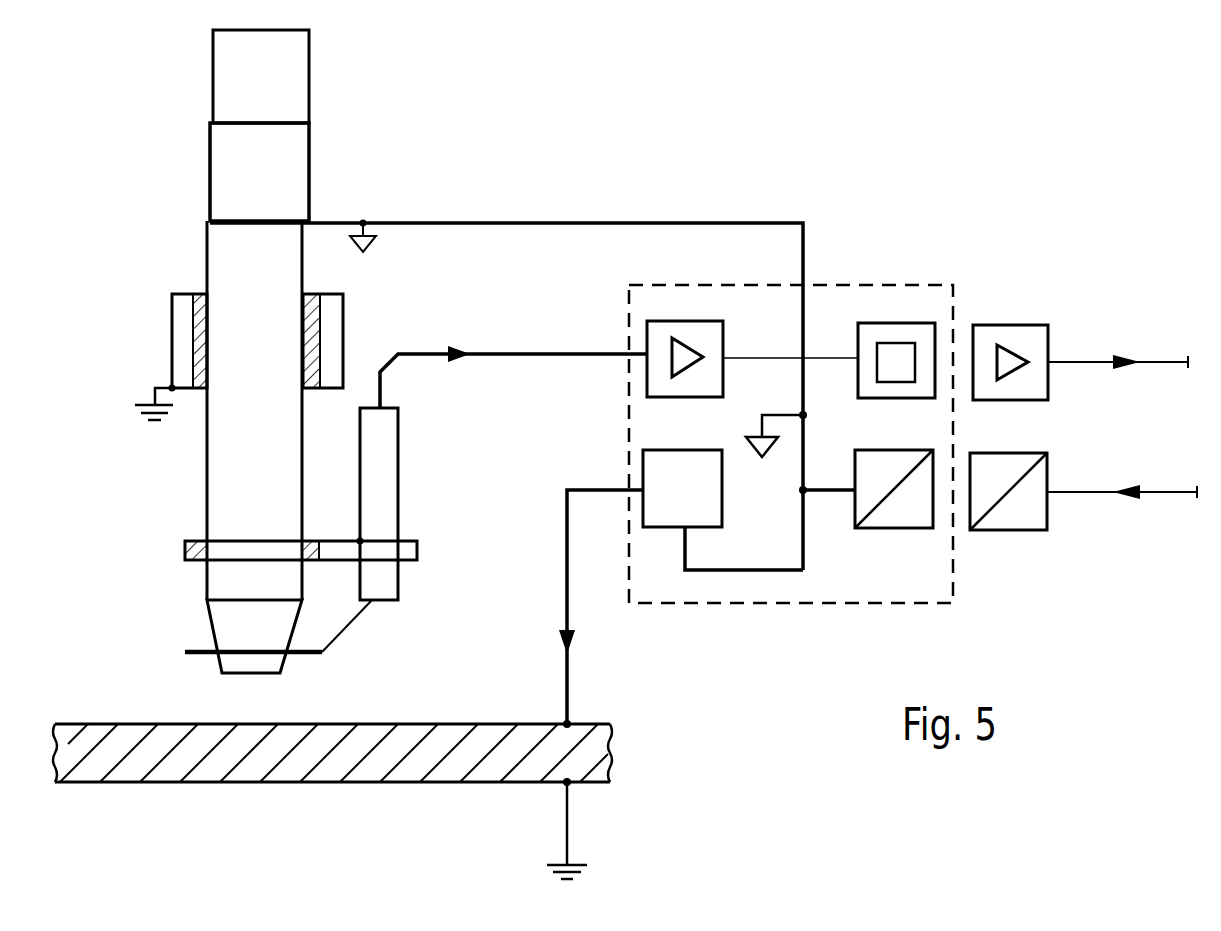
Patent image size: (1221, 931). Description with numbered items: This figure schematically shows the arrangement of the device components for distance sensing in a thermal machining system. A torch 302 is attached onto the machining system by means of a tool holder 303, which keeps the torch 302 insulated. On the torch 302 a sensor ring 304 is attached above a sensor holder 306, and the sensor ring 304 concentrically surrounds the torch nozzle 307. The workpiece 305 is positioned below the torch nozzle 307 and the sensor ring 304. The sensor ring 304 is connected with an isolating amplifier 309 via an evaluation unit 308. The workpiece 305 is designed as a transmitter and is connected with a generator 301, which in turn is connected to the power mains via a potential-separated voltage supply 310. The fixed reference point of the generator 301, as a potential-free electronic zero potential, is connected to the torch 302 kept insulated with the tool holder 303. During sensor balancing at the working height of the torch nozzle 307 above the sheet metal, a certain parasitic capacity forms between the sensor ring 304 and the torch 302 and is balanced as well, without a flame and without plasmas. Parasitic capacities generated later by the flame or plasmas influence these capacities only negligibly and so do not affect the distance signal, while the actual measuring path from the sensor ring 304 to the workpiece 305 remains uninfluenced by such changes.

The generator 301 is at (650, 478).
The torch 302 is at (295, 68).
The tool holder 303 is at (180, 327).
The sensor ring 304 is at (190, 662).
The workpiece 305 is at (238, 770).
The sensor holder 306 is at (185, 547).
The torch nozzle 307 is at (235, 628).
The evaluation unit 308 is at (655, 335).
The isolating amplifier 309 is at (1040, 340).
The potential-separated voltage supply 310 is at (1035, 515).